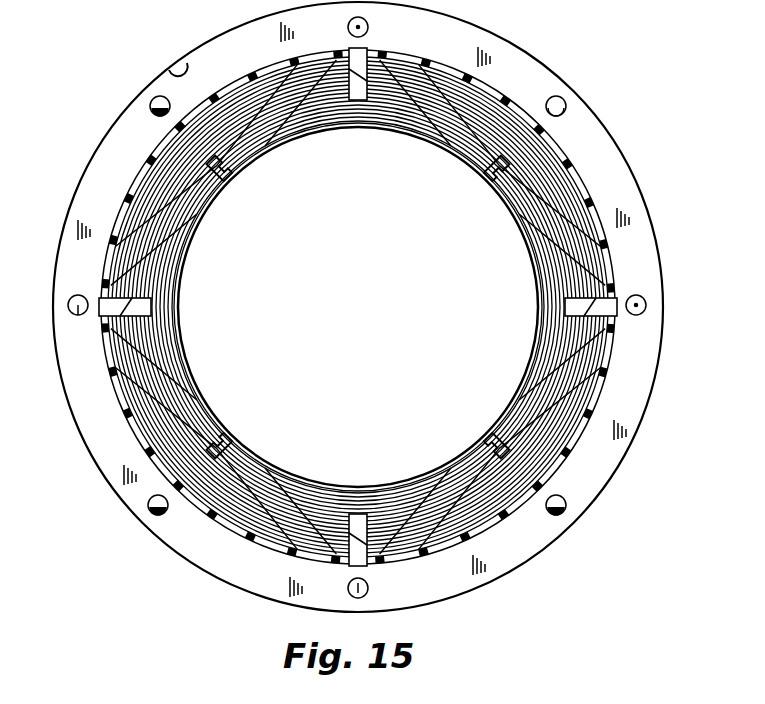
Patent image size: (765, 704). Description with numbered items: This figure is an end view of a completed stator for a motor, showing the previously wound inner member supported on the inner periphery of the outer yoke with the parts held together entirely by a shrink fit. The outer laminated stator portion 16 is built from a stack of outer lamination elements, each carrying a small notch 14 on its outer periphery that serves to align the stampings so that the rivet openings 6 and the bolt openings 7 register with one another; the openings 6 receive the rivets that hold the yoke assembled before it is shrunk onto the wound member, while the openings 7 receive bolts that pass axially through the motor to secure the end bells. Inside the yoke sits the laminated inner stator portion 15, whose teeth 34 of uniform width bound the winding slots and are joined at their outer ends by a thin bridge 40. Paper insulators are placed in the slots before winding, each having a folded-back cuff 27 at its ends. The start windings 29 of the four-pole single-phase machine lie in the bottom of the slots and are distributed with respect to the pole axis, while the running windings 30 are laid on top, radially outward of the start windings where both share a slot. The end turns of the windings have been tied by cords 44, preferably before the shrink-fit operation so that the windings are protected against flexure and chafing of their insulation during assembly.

The notch 14 is at (178, 62).
The rivet openings 6 is at (150, 114).
The bolt openings 7 is at (368, 27).
The laminated outer stator portion 16 is at (615, 152).
The start windings 29 is at (436, 136).
The running windings 30 is at (262, 148).
The cuff 27 is at (490, 178).
The laminated inner stator portion 15 is at (491, 205).
The teeth 34 is at (216, 430).
The bridge 40 is at (257, 443).
The cords 44 is at (157, 405).